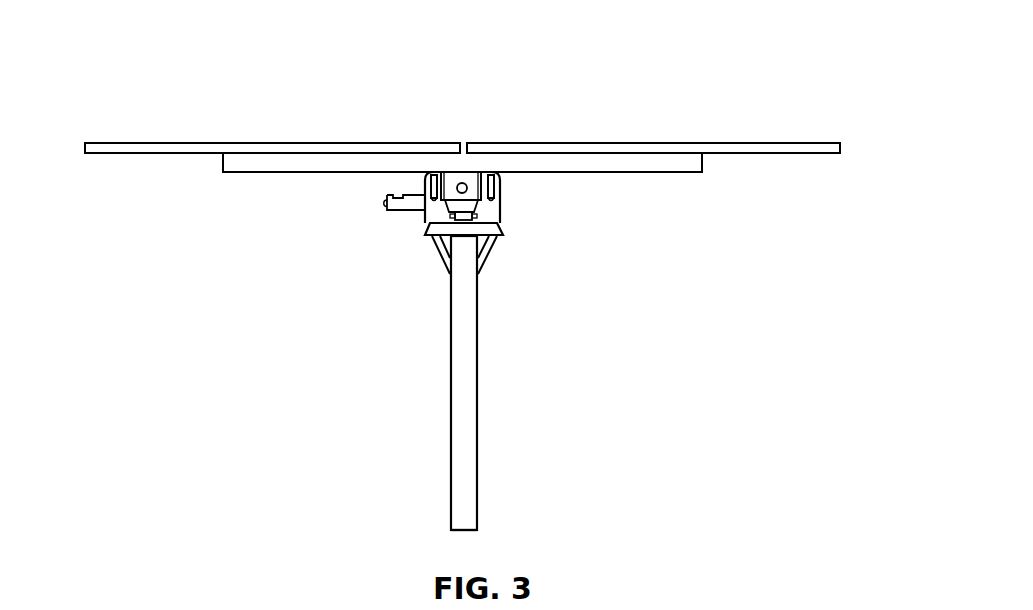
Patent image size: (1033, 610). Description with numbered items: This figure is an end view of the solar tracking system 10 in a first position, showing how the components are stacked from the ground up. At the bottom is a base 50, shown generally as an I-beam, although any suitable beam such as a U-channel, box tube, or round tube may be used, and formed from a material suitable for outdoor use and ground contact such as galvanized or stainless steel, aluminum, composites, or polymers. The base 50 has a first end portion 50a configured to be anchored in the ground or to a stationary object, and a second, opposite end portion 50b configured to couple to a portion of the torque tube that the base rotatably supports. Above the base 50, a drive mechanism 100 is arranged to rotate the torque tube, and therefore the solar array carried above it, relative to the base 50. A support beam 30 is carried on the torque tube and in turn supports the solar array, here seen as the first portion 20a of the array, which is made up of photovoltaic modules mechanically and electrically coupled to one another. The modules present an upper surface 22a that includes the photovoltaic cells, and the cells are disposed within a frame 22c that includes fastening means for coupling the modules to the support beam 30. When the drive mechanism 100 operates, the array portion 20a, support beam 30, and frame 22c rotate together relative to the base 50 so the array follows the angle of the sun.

The solar tracking system 10 is at (793, 46).
The first portion of the solar array 20a is at (116, 116).
The upper surface of the photovoltaic modules 22a is at (768, 142).
The frame 22c is at (768, 154).
The support beam 30 is at (650, 173).
The drive mechanism 100 is at (360, 214).
The base 50 is at (478, 362).
The first end portion of the base 50a is at (490, 506).
The second end portion of the base 50b is at (490, 286).